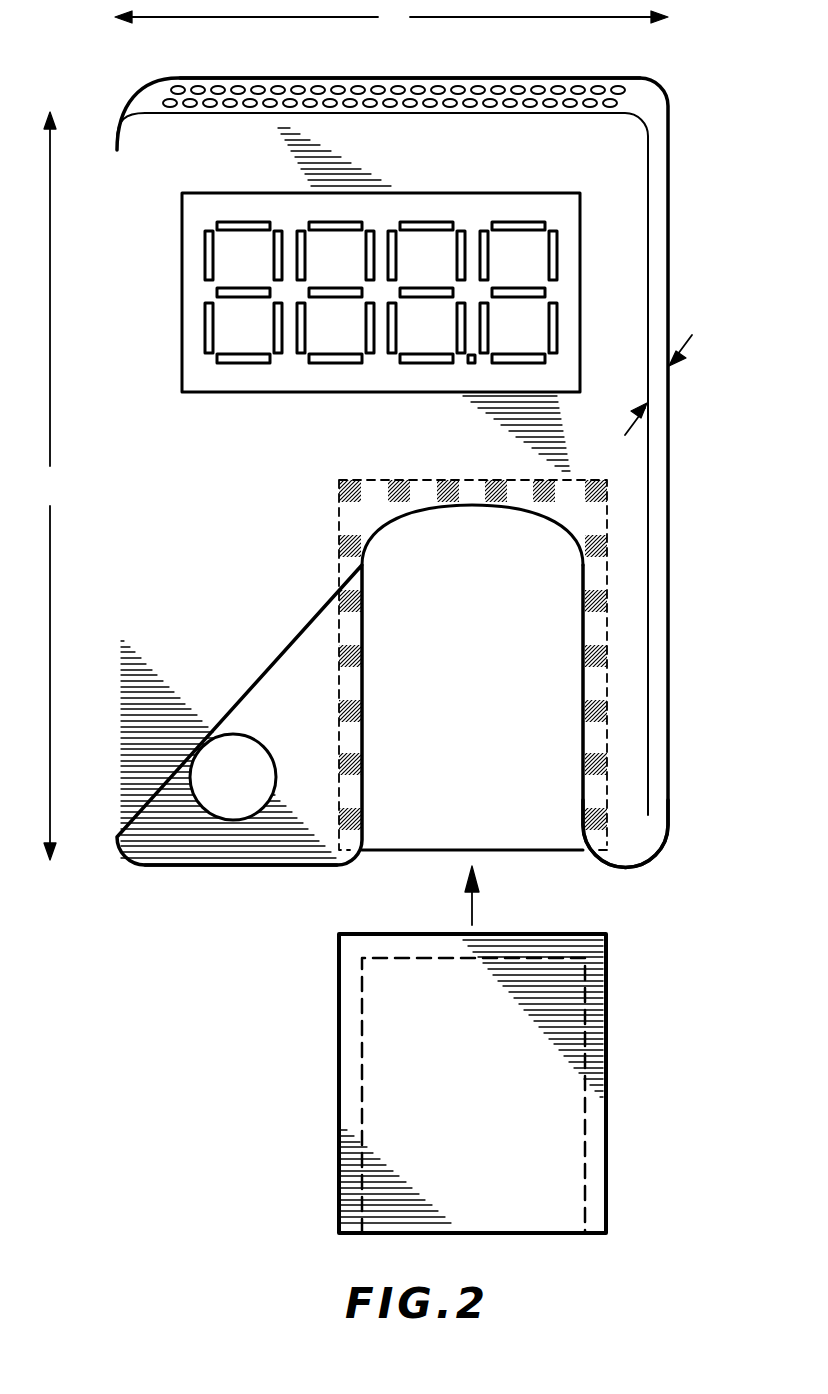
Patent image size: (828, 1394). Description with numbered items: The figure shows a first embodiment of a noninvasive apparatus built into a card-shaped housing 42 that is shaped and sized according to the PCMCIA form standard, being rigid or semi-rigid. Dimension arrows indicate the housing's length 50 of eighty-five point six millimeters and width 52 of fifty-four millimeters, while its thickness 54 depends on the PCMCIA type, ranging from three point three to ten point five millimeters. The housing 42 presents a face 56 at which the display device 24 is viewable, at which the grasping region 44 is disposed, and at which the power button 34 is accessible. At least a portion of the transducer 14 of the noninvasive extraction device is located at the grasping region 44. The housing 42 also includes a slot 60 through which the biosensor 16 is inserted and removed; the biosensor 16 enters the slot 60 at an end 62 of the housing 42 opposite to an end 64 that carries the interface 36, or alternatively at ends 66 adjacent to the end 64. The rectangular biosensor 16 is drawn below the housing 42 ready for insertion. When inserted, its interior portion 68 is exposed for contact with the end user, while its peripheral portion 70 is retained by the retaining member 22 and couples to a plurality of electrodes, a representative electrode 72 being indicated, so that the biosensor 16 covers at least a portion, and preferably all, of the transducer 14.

The transducer 14 is at (543, 677).
The biosensor 16 is at (606, 975).
The retaining member 22 is at (602, 790).
The display device 24 is at (578, 223).
The power button 34 is at (205, 807).
The interface 36 is at (438, 85).
The housing 42 is at (670, 510).
The grasping region 44 is at (566, 738).
The length 50 is at (53, 486).
The width 52 is at (391, 17).
The thickness 54 is at (656, 388).
The face 56 is at (178, 720).
The slot 60 is at (583, 890).
The end 62 is at (248, 866).
The end 64 is at (266, 78).
The ends 66 is at (656, 600).
The interior portion 68 is at (543, 1205).
The peripheral portion 70 is at (593, 1157).
The electrode 72 is at (603, 818).